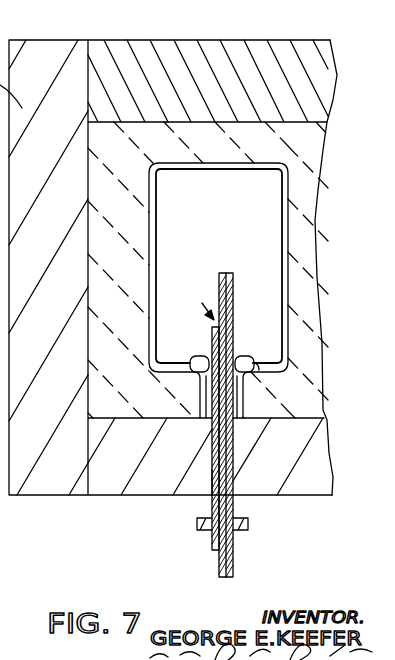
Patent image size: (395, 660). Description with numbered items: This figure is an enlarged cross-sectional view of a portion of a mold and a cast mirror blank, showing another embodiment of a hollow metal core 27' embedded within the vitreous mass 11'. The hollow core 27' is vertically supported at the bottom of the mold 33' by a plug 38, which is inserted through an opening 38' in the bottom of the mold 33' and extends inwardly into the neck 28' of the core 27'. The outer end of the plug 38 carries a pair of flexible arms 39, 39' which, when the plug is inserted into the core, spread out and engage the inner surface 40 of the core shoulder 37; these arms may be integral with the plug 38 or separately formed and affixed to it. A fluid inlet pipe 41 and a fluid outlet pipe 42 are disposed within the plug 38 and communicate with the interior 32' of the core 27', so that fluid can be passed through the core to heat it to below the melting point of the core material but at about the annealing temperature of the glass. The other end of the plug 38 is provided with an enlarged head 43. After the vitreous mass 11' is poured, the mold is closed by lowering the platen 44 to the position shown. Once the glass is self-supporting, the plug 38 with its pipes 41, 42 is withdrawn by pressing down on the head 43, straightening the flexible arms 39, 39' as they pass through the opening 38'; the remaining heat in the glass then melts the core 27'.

The platen 44 is at (107, 68).
The hollow core 27' is at (234, 273).
The vitreous mass 11' is at (110, 205).
The interior of core 32' is at (245, 241).
The fluid outlet pipe 42 is at (207, 333).
The fluid inlet pipe 41 is at (233, 285).
The flexible arm 39 is at (187, 344).
The flexible arm 39' is at (250, 344).
The inner surface of core shoulder 40 is at (260, 368).
The core shoulder 37 is at (262, 378).
The neck of core 28' is at (208, 270).
The plug 38 is at (248, 438).
The opening in mold bottom 38' is at (179, 503).
The enlarged head 43 is at (247, 532).
The mold 33' is at (166, 291).